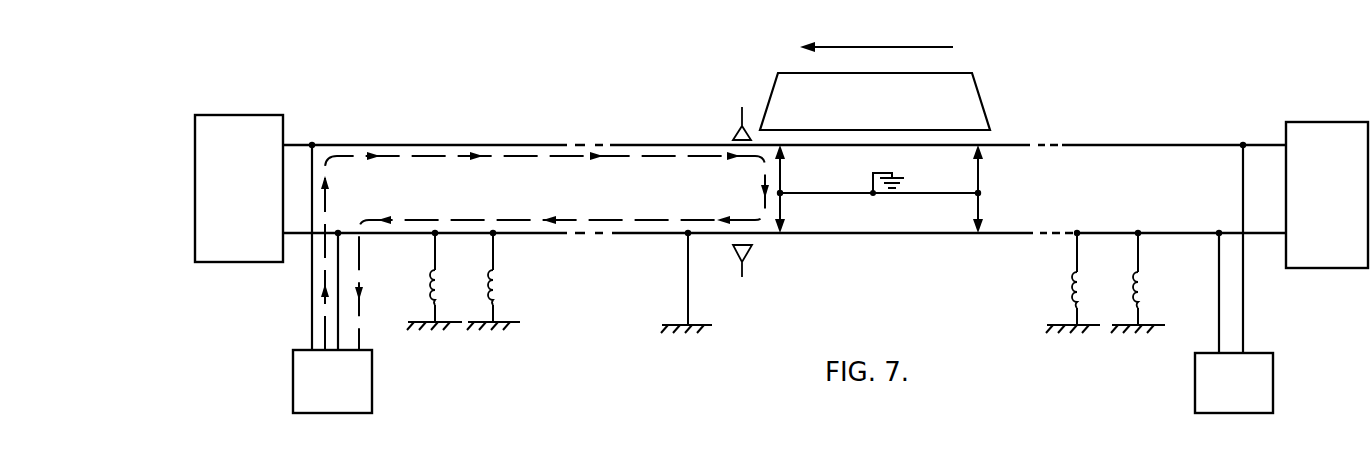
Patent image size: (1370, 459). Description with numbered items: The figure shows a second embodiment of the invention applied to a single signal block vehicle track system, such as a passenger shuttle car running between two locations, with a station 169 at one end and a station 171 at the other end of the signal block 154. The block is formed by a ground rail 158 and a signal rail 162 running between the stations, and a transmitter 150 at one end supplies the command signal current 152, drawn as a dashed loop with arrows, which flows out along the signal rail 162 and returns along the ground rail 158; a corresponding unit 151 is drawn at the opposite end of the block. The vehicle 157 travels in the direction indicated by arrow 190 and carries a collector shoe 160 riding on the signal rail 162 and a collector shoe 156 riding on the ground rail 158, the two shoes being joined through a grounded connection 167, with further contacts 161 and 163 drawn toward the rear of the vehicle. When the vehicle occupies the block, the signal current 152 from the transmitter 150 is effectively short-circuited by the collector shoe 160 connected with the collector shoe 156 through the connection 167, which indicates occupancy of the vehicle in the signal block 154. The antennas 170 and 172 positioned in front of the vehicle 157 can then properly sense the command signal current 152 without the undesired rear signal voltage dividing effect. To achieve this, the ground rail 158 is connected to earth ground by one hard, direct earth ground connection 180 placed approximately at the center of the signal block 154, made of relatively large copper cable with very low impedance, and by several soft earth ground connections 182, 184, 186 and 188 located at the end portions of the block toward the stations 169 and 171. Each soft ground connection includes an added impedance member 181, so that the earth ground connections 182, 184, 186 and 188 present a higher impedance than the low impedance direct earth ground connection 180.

The transmitter 150 is at (372, 388).
The transceiver T3 (right) 151 is at (1273, 396).
The signal current 152 is at (517, 160).
The signal block 154 is at (1058, 189).
The collector shoe 156 is at (785, 226).
The vehicle 157 is at (984, 97).
The ground rail 158 is at (672, 236).
The collector shoe 160 is at (785, 152).
The coupling arrow 161 is at (973, 151).
The signal rail 162 is at (661, 144).
The coupling arrow 163 is at (975, 225).
The connection 167 is at (782, 181).
The station 169 is at (258, 263).
The antenna 170 is at (750, 250).
The station 171 is at (1340, 270).
The antenna 172 is at (737, 133).
The direct earth ground connection 180 is at (687, 292).
The impedance member 181 is at (489, 272).
The earth ground connection 182 is at (495, 250).
The earth ground connection 184 is at (433, 238).
The earth ground connection 186 is at (1075, 243).
The earth ground connection 188 is at (1140, 246).
The arrow 190 is at (890, 45).